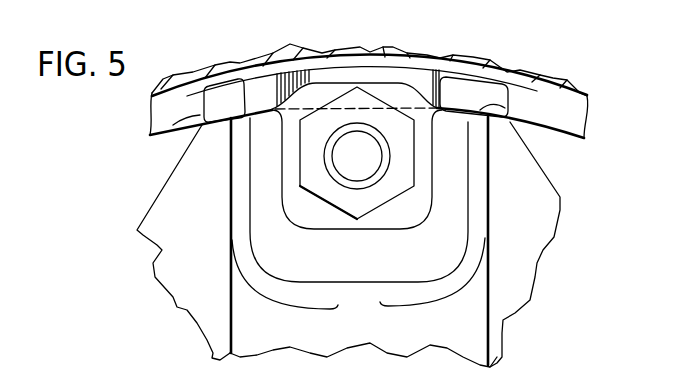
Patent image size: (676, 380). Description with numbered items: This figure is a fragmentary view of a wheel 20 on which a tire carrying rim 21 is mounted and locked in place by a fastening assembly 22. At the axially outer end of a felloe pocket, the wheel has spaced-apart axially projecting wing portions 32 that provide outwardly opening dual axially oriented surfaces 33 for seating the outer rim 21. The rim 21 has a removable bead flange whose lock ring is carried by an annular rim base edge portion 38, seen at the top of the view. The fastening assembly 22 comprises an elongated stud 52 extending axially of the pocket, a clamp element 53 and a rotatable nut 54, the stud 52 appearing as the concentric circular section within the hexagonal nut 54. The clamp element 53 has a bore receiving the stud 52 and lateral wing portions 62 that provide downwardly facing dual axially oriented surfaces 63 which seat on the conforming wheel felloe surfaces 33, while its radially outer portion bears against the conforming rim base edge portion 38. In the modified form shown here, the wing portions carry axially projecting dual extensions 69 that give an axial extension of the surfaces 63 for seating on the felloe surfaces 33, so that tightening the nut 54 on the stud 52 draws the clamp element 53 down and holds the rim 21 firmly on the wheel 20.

The wheel 20 is at (123, 203).
The tire carrying rim 21 is at (449, 25).
The fastening assembly 22 is at (375, 196).
The wing portion 32 is at (240, 197).
The axially oriented surface 33 is at (240, 115).
The rim base edge portion 38 is at (381, 52).
The elongated stud 52 is at (377, 156).
The clamp element 53 is at (367, 228).
The rotatable nut 54 is at (338, 197).
The lateral wing portion 62 is at (174, 134).
The axially oriented surface 63 is at (229, 137).
The axially projecting dual extension 69 is at (222, 95).